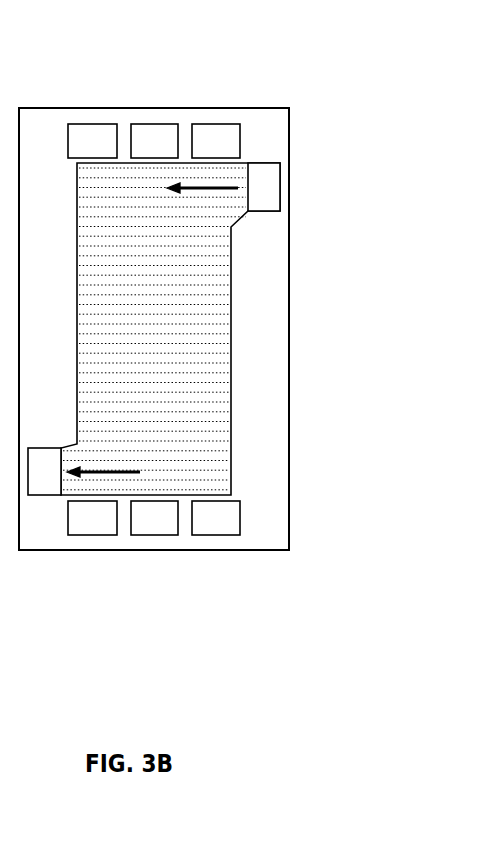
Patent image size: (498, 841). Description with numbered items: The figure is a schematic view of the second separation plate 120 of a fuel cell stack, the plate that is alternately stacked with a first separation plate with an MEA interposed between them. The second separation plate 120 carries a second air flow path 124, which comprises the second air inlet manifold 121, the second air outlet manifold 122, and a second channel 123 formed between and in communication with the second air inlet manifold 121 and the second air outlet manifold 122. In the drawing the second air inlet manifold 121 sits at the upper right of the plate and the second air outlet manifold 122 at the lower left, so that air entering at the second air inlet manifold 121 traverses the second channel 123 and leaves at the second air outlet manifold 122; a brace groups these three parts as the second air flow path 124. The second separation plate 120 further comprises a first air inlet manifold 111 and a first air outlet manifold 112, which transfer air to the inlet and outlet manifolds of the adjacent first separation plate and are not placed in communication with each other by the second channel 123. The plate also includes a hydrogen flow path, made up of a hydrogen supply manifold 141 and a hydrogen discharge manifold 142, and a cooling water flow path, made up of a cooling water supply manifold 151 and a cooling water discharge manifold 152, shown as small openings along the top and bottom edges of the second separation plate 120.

The first air inlet manifold 111 is at (88, 124).
The cooling water supply manifold 151 is at (150, 124).
The hydrogen discharge manifold 142 is at (215, 124).
The second air inlet manifold 121 is at (263, 211).
The second channel 123 is at (210, 340).
The second air flow path 124 is at (350, 236).
The second air outlet manifold 122 is at (61, 462).
The first air outlet manifold 112 is at (240, 517).
The hydrogen supply manifold 141 is at (92, 535).
The cooling water discharge manifold 152 is at (155, 535).
The second separation plate 120 is at (232, 573).